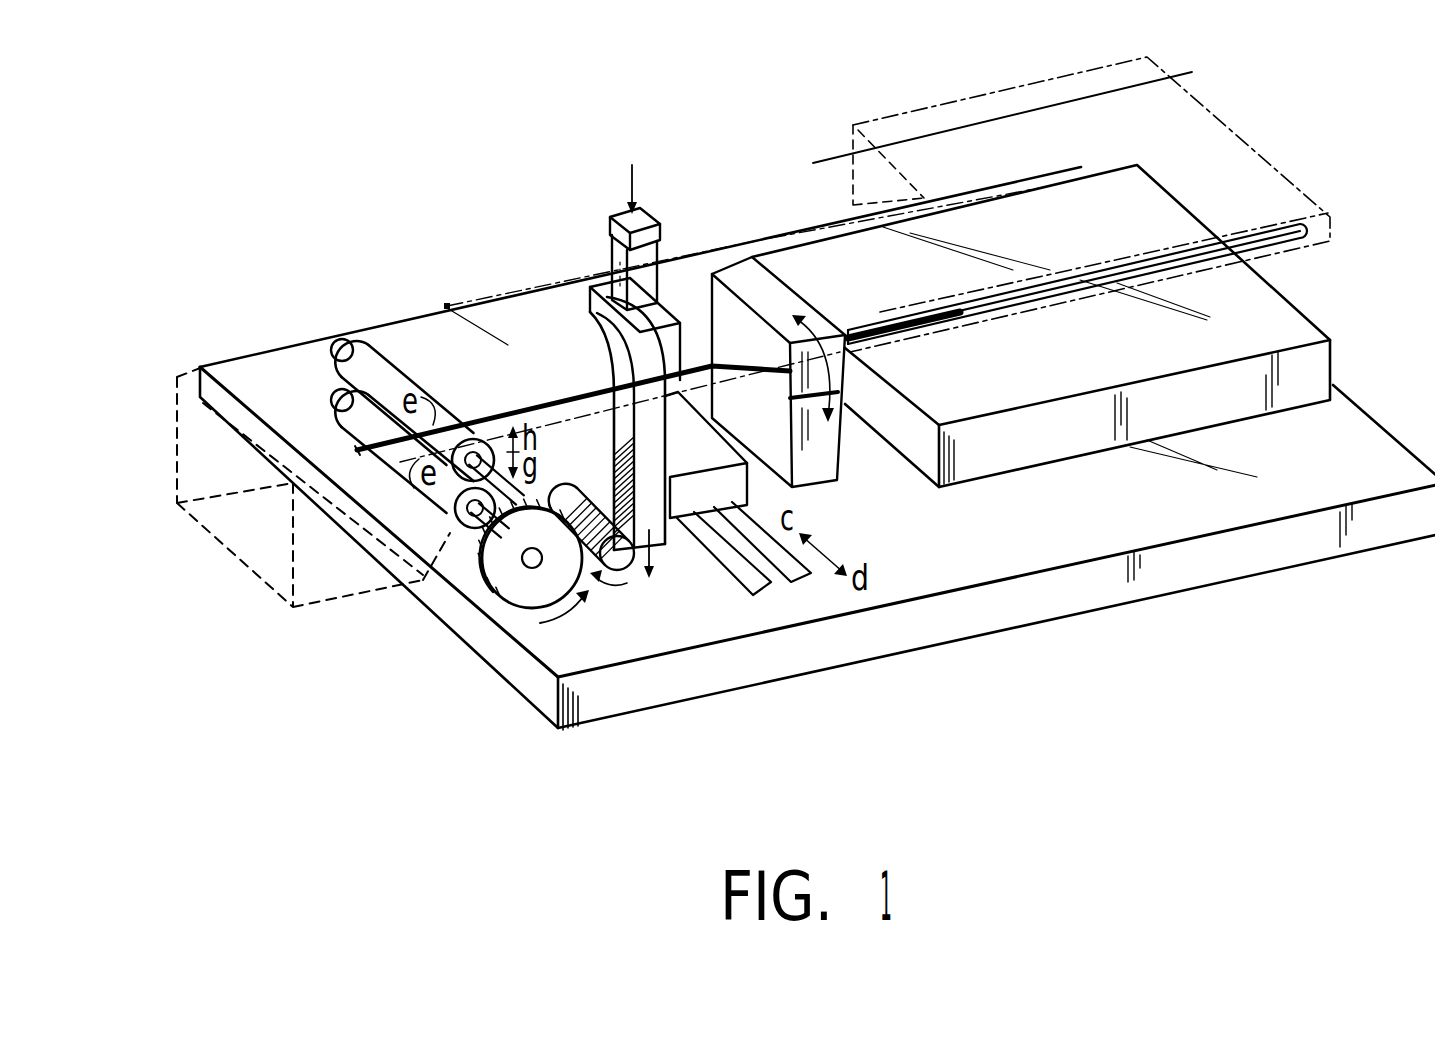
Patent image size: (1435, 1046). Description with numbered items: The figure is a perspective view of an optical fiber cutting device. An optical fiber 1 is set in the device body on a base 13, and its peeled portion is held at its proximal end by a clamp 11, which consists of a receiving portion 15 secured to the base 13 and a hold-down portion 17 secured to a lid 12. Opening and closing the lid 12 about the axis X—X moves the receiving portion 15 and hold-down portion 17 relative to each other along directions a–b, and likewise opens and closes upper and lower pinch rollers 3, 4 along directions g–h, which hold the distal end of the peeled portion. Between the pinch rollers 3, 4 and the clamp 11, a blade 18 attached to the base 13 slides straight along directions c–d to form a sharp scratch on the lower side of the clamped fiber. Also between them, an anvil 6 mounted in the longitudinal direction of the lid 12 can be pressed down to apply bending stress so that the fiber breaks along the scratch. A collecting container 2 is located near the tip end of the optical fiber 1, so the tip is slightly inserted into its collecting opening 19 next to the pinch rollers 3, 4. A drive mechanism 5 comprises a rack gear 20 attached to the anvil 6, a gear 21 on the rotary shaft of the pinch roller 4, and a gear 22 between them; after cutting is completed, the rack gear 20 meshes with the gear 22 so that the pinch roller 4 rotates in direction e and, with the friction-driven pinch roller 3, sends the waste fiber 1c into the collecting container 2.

The optical fiber 1 is at (492, 388).
The waste fiber 1c is at (358, 454).
The collecting container 2 is at (265, 587).
The upper pinch roller 3 is at (369, 364).
The lower pinch roller 4 is at (340, 392).
The drive mechanism 5 is at (678, 788).
The anvil 6 is at (608, 226).
The clamp 11 is at (773, 177).
The lid 12 is at (1250, 147).
The base 13 is at (1172, 578).
The receiving portion 15 is at (707, 335).
The hold-down portion 17 is at (748, 262).
The blade 18 is at (720, 470).
The collecting opening 19 is at (393, 356).
The rack gear 20 is at (655, 553).
The gear 21 is at (523, 603).
The gear 22 is at (612, 572).